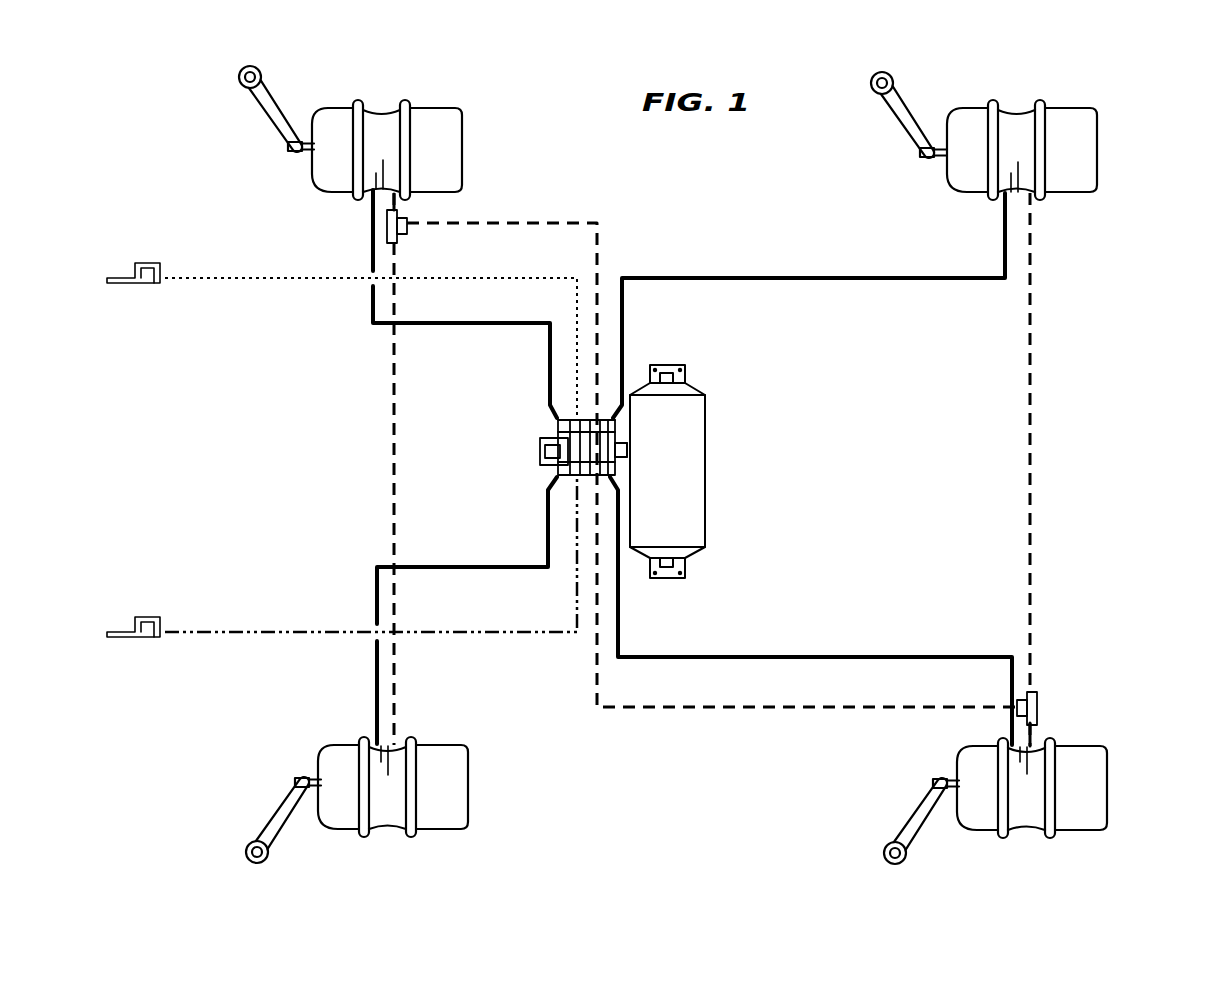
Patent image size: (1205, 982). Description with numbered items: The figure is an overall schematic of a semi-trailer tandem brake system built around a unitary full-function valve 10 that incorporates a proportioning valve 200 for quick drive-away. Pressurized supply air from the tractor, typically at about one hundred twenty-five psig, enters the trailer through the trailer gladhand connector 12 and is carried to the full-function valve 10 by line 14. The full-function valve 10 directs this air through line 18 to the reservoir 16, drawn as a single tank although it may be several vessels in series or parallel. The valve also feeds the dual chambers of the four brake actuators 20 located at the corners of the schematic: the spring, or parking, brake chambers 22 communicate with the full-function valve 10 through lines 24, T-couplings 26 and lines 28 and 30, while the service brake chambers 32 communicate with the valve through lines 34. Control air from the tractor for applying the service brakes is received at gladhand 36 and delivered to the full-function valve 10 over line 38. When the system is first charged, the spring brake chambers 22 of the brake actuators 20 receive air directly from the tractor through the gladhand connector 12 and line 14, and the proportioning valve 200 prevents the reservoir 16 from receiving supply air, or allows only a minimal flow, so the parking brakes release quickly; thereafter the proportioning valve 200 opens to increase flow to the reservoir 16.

The full-function valve 10 is at (528, 449).
The trailer gladhand connector 12 is at (142, 642).
The line 14 is at (460, 636).
The reservoir 16 is at (684, 433).
The line 18 is at (618, 452).
The brake actuator 20 is at (700, 464).
The spring brake chamber 22 is at (447, 156).
The line 24 is at (540, 222).
The T-coupling 26 is at (403, 236).
The line 28 is at (391, 430).
The line 30 is at (397, 206).
The service brake chamber 32 is at (316, 118).
The line 34 is at (485, 326).
The gladhand 36 is at (143, 287).
The line 38 is at (305, 281).
The proportioning valve 200 is at (625, 420).